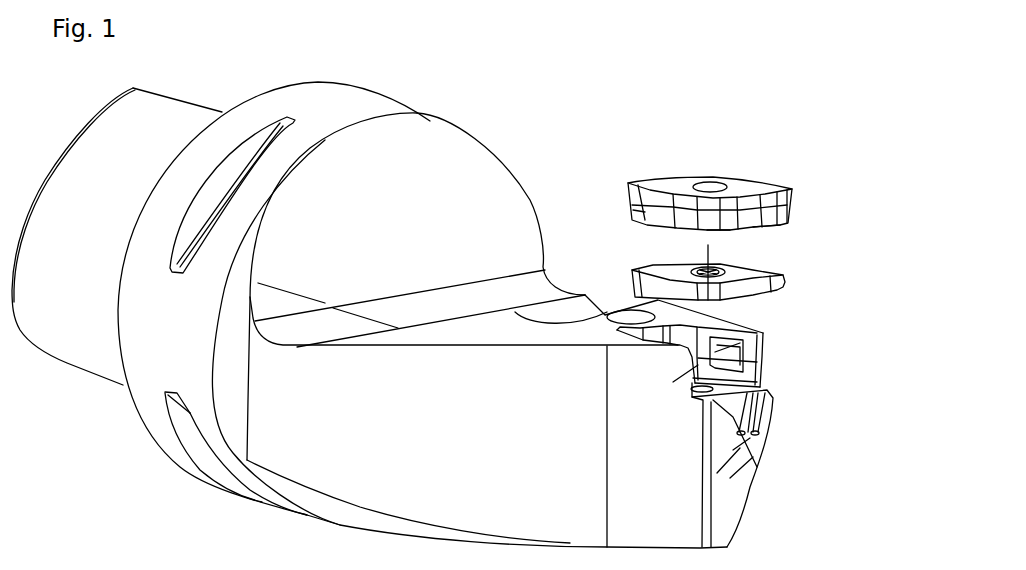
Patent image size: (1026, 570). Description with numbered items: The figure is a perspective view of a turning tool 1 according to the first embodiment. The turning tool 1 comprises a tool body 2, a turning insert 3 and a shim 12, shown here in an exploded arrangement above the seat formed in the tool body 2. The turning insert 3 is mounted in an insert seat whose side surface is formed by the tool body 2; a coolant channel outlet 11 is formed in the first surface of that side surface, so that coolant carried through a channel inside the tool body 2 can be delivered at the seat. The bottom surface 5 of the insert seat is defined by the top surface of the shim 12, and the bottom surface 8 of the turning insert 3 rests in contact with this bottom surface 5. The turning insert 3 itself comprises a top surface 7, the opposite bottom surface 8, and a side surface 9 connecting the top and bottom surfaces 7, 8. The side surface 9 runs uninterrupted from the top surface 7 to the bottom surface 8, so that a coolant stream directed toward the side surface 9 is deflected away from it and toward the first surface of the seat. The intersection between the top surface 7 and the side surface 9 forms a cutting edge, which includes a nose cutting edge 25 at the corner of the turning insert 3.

The turning tool 1 is at (445, 275).
The tool body 2 is at (175, 375).
The turning insert 3 is at (766, 200).
The bottom surface of the insert seat 5 is at (753, 281).
The top surface 7 is at (766, 170).
The bottom surface 8 is at (748, 228).
The side surface 9 is at (757, 212).
The coolant channel outlet 11 is at (710, 358).
The shim 12 is at (777, 289).
The nose cutting edge 25 is at (790, 188).